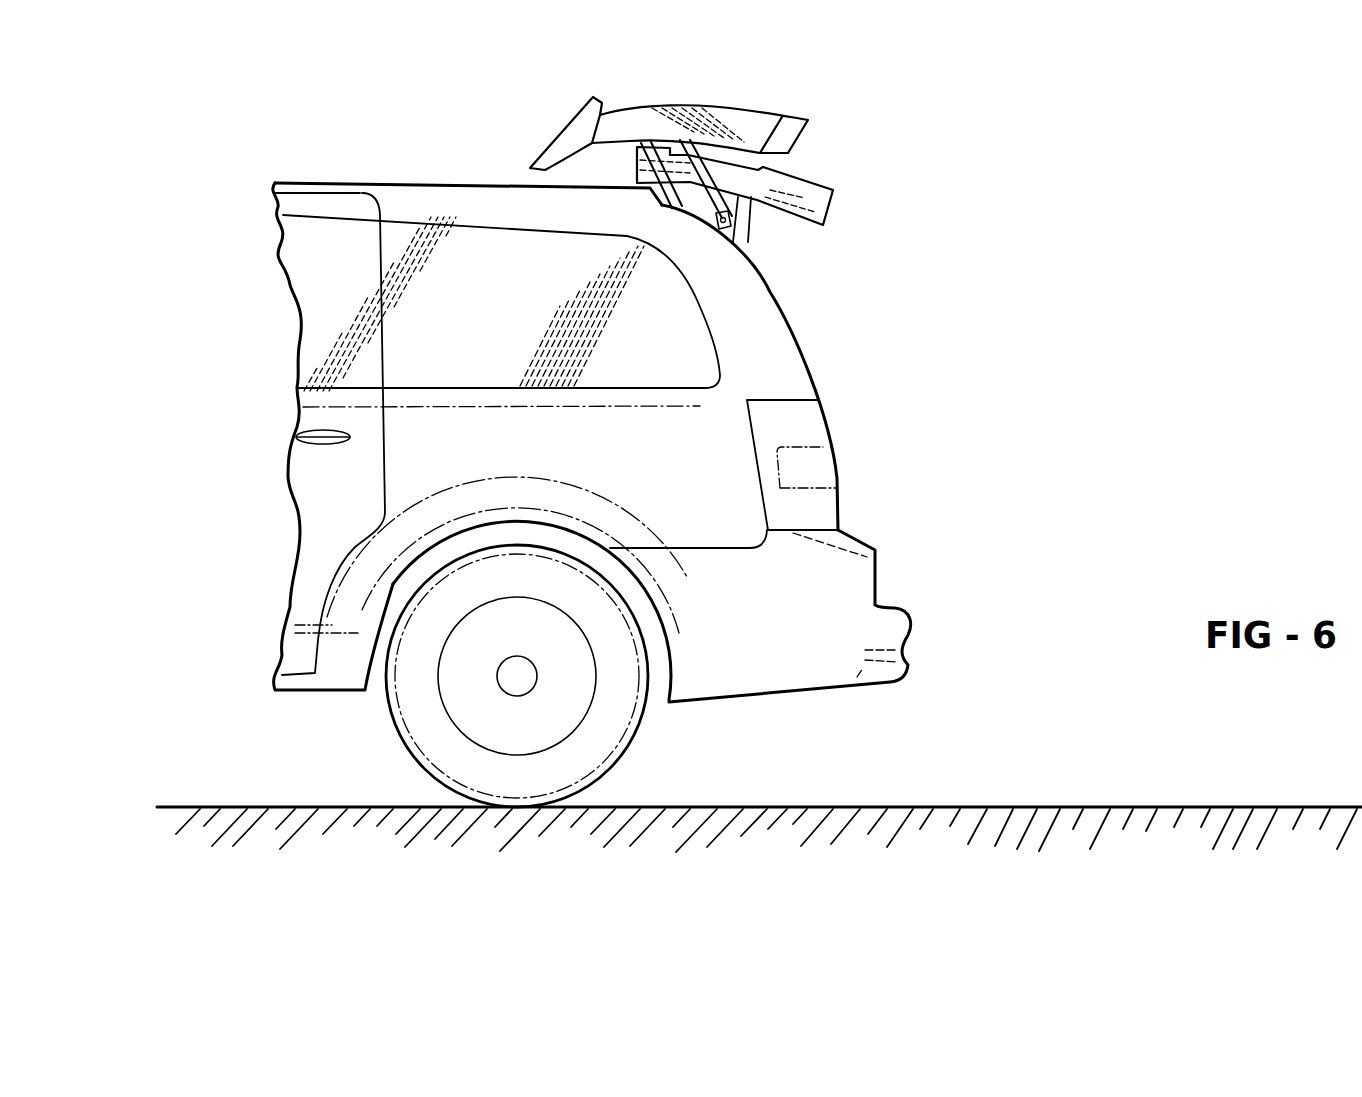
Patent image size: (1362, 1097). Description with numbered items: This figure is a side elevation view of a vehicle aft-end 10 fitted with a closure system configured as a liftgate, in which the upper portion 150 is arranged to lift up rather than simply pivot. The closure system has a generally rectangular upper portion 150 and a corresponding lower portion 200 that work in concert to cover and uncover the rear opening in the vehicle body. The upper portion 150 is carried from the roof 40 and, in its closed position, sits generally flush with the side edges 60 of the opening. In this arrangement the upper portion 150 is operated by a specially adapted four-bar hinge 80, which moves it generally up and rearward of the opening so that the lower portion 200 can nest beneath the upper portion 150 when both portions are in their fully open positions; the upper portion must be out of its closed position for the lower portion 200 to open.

The vehicle aft-end 10 is at (311, 709).
The roof 40 is at (416, 180).
The side edges 60 is at (797, 340).
The four-bar hinge 80 is at (695, 180).
The upper portion 150 is at (690, 104).
The lower portion 200 is at (830, 200).